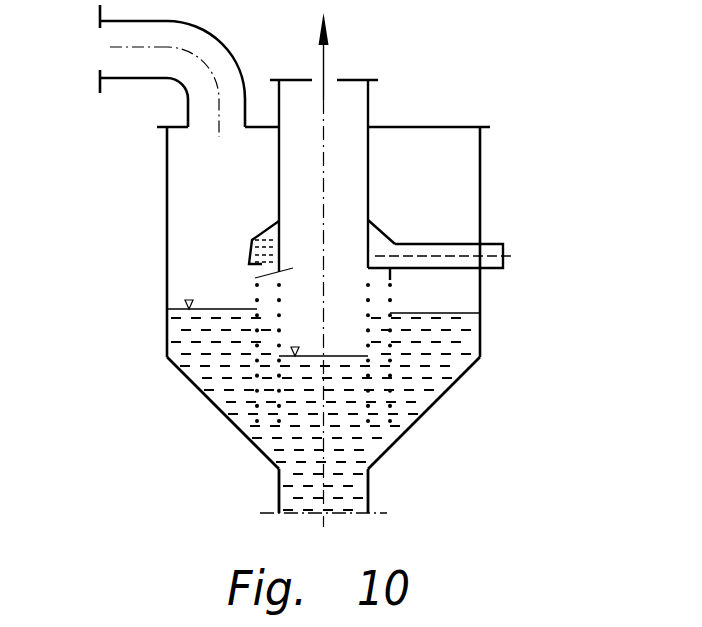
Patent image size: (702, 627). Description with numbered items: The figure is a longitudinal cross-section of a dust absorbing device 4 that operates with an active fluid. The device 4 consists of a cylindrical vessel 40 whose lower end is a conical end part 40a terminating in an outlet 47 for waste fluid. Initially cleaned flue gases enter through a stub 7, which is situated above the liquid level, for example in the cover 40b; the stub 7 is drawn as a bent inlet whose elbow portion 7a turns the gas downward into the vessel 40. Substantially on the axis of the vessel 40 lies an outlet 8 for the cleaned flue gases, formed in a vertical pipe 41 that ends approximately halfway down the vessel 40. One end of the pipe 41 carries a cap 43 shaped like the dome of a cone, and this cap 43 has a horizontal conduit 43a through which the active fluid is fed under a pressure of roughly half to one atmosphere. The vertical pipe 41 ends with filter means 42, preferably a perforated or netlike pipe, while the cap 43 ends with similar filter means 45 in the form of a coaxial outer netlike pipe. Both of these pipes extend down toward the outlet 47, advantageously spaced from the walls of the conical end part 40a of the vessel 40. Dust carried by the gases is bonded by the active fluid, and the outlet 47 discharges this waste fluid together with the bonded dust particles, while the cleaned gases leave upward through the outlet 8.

The dust absorbing device 4 is at (325, 292).
The stub 7 is at (110, 46).
The elbow portion of inlet pipe 7a is at (172, 60).
The outlet 8 is at (342, 265).
The vessel 40 is at (435, 167).
The conical end part 40a is at (447, 392).
The cover 40b is at (407, 128).
The vertical pipe 41 is at (278, 167).
The filter means 42 is at (368, 345).
The cap 43 is at (277, 222).
The horizontal conduit 43a is at (500, 244).
The filter means 45 is at (255, 360).
The outlet 47 is at (370, 492).